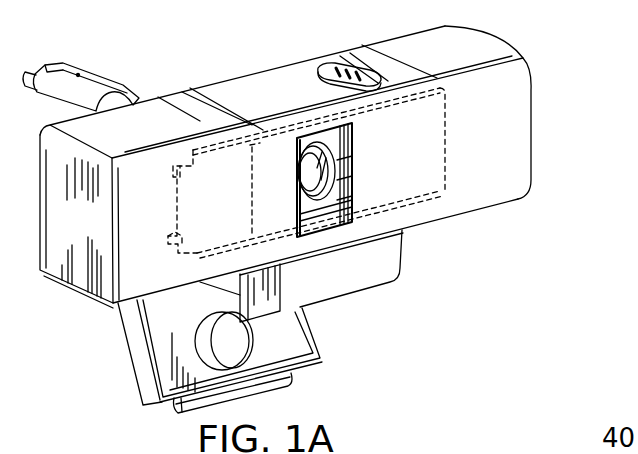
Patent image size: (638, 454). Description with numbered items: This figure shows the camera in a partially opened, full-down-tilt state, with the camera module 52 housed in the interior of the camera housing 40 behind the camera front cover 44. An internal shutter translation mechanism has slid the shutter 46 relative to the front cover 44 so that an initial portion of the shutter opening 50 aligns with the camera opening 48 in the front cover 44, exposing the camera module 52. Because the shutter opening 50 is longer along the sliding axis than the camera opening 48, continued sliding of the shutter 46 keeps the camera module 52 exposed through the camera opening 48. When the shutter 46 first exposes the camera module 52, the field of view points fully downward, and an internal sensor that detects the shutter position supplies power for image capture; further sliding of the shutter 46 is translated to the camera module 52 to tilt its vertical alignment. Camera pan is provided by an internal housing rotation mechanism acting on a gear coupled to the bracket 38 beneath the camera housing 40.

The bracket 38 is at (404, 257).
The camera housing 40 is at (275, 78).
The camera front cover 44 is at (520, 99).
The shutter 46 is at (446, 133).
The camera opening 48 is at (312, 214).
The shutter opening 50 is at (257, 148).
The camera module 52 is at (337, 158).